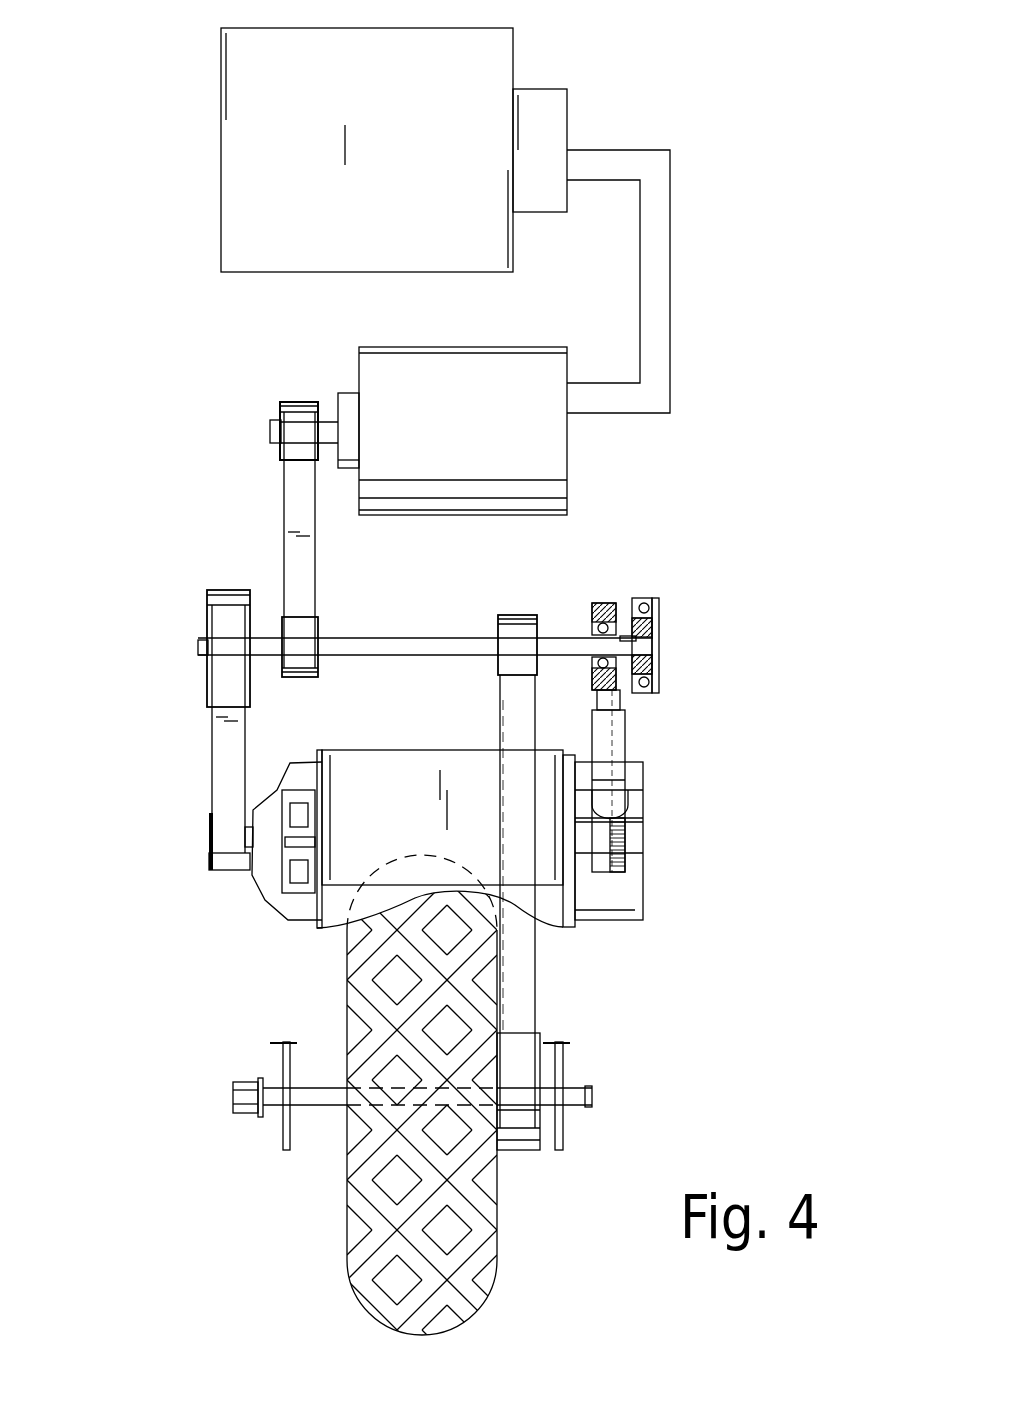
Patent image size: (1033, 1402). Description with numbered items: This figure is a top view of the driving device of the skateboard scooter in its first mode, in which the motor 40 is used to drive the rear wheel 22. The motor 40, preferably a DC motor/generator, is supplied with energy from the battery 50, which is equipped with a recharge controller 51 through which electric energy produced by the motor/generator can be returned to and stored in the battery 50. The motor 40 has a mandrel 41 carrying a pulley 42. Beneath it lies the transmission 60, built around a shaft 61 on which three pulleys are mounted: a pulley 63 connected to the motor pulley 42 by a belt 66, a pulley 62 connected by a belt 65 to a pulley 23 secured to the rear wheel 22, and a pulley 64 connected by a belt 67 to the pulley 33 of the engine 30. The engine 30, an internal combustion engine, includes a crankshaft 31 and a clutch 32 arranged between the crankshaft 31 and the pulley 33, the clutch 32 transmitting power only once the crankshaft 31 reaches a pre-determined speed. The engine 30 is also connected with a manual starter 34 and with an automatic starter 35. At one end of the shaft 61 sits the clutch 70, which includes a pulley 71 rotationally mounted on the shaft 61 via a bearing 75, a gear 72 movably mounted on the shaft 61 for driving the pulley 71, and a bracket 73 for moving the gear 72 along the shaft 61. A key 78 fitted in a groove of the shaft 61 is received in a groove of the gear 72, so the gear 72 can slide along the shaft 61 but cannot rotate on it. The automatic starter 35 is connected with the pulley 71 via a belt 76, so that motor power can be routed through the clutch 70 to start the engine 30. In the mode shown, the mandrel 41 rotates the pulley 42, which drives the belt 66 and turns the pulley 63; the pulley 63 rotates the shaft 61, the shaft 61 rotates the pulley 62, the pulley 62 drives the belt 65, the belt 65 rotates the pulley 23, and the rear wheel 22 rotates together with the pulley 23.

The rear wheel 22 is at (475, 1232).
The pulley 23 is at (540, 1150).
The engine 30 is at (338, 868).
The crankshaft 31 is at (300, 848).
The clutch 32 is at (290, 827).
The pulley 33 is at (209, 834).
The manual starter 34 is at (620, 752).
The automatic starter 35 is at (620, 878).
The motor 40 is at (377, 362).
The mandrel 41 is at (270, 428).
The pulley 42 is at (280, 457).
The battery 50 is at (262, 229).
The recharge controller 51 is at (547, 110).
The transmission 60 is at (188, 615).
The shaft 61 is at (410, 635).
The pulley 62 is at (486, 615).
The pulley 63 is at (322, 620).
The pulley 64 is at (207, 700).
The belt 65 is at (525, 990).
The belt 66 is at (300, 527).
The belt 67 is at (223, 772).
The clutch 70 is at (666, 583).
The pulley 71 is at (602, 604).
The gear 72 is at (634, 616).
The bracket 73 is at (650, 598).
The bearing 75 is at (597, 628).
The belt 76 is at (603, 703).
The key 78 is at (645, 637).